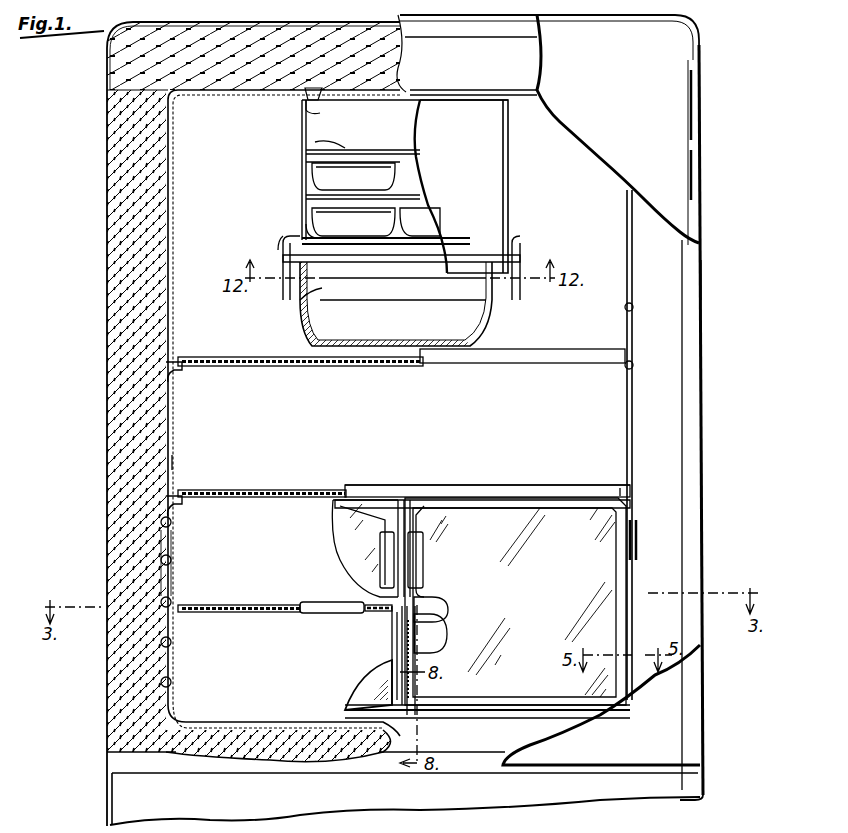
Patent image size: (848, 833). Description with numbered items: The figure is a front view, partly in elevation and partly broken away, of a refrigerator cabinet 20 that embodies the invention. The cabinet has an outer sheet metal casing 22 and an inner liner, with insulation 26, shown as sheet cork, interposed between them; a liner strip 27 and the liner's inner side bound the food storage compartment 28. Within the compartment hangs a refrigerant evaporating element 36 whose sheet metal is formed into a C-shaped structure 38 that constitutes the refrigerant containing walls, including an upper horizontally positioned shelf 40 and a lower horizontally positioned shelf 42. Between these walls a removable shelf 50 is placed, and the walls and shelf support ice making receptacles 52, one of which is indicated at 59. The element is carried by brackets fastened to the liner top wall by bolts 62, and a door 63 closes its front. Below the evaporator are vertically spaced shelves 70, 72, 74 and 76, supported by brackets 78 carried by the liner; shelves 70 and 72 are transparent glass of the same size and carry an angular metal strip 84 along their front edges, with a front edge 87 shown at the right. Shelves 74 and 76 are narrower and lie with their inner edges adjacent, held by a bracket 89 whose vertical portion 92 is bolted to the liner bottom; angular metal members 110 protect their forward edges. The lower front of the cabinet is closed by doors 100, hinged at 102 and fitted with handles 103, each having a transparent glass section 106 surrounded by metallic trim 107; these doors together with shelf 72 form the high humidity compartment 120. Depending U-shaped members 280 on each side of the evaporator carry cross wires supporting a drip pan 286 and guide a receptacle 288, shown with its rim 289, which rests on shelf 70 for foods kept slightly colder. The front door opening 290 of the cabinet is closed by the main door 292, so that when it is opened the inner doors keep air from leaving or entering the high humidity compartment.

The cabinet 20 is at (703, 270).
The outer sheet metal casing 22 is at (106, 411).
The insulation 26 is at (130, 448).
The inner liner 27 is at (175, 442).
The food storage compartment 28 is at (196, 456).
The refrigerant evaporating element 36 is at (552, 187).
The C-shaped structure 38 is at (398, 150).
The upper horizontally positioned shelf 40 is at (320, 150).
The lower horizontally positioned shelf 42 is at (312, 230).
The removable shelf 50 is at (395, 190).
The ice making receptacles 52 is at (330, 216).
The tray guide 59 is at (310, 174).
The bolts 62 is at (312, 117).
The door 63 is at (495, 212).
The shelf 70 is at (292, 366).
The shelf 72 is at (298, 490).
The shelf 74 is at (258, 604).
The shelf 76 is at (440, 598).
The brackets 78 is at (182, 372).
The angular metal strip 84 is at (382, 490).
The shelf front bar 87 is at (540, 364).
The bracket 89 is at (425, 636).
The vertical portion 92 is at (398, 646).
The doors 100 is at (440, 500).
The hinges 102 is at (640, 530).
The handles 103 is at (392, 562).
The transparent glass sections 106 is at (500, 515).
The metallic trim 107 is at (584, 496).
The angular metal members 110 is at (306, 612).
The high humidity compartment 120 is at (200, 578).
The U-shaped members 280 is at (282, 253).
The drip pan 286 is at (280, 245).
The receptacle 288 is at (478, 322).
The tray rim 289 is at (310, 300).
The door opening 290 is at (632, 307).
The door 292 is at (665, 168).